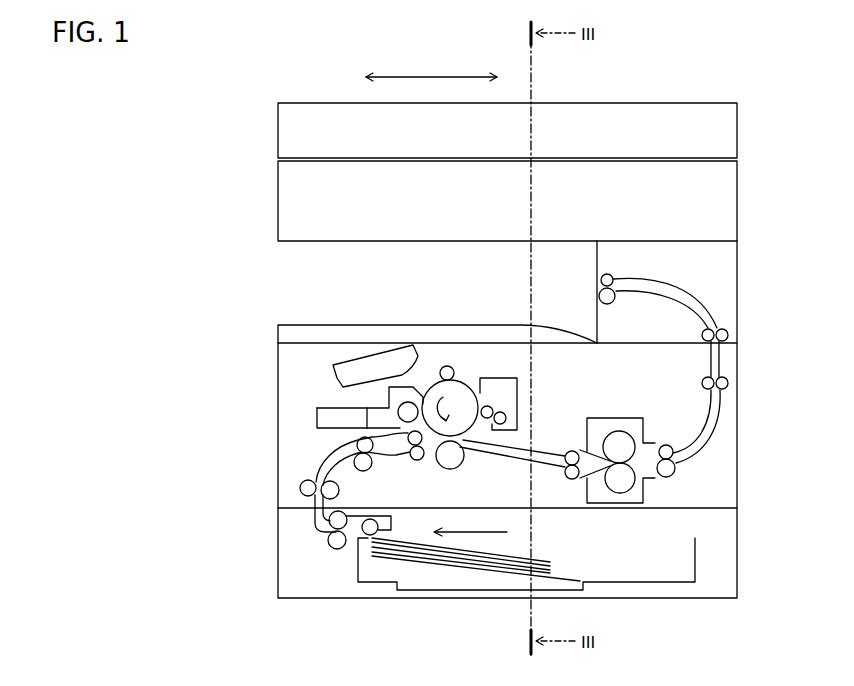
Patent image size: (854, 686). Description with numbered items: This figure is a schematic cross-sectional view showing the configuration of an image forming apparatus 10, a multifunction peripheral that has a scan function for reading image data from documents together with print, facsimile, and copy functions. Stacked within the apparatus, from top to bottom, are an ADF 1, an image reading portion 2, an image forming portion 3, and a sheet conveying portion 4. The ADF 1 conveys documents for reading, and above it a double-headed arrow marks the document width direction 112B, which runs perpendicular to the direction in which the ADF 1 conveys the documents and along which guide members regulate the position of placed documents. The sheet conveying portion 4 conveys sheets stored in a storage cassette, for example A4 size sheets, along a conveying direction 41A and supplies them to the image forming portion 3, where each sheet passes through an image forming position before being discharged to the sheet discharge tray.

The image forming apparatus 10 is at (260, 71).
The ADF 1 is at (278, 122).
The image reading portion 2 is at (278, 208).
The image forming portion 3 is at (278, 397).
The sheet conveying portion 4 is at (278, 557).
The document width direction 112B is at (433, 72).
The conveying direction 41A is at (476, 530).